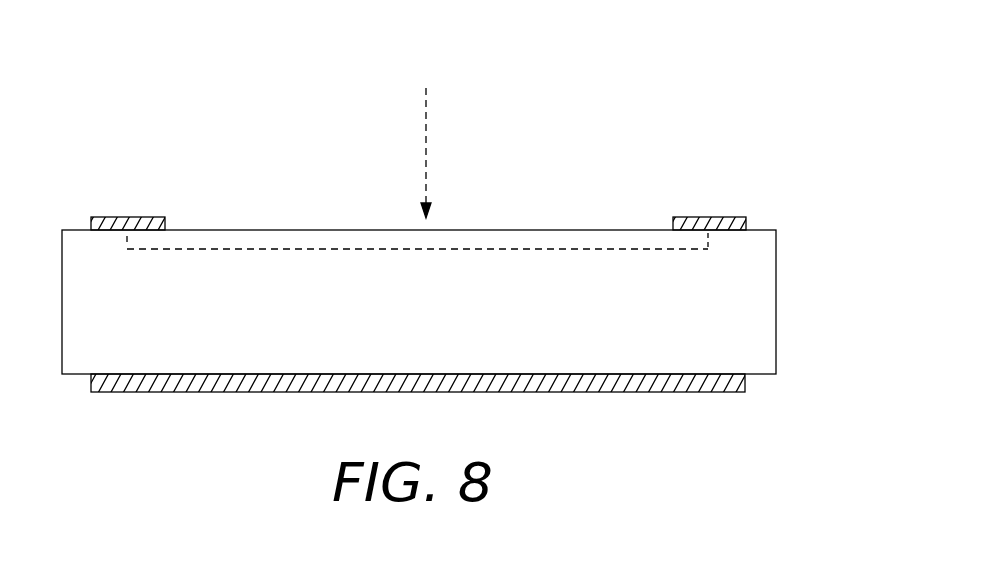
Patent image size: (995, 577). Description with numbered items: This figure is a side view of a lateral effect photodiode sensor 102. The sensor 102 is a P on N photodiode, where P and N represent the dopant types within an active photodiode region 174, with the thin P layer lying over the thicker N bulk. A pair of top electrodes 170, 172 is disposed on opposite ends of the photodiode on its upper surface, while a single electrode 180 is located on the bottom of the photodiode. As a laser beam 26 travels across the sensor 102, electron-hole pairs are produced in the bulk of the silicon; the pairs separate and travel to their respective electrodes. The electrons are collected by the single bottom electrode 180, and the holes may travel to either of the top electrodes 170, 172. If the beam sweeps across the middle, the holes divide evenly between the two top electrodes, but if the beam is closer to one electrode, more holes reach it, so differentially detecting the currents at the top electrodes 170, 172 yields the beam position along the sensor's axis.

The lateral effect photodiode sensor 102 is at (357, 128).
The laser beam 26 is at (426, 122).
The top electrode 170 is at (148, 217).
The top electrode 172 is at (688, 217).
The active photodiode region 174 is at (443, 230).
The single electrode 180 is at (738, 384).
The N dopant type N is at (419, 302).
The P dopant type P is at (333, 240).